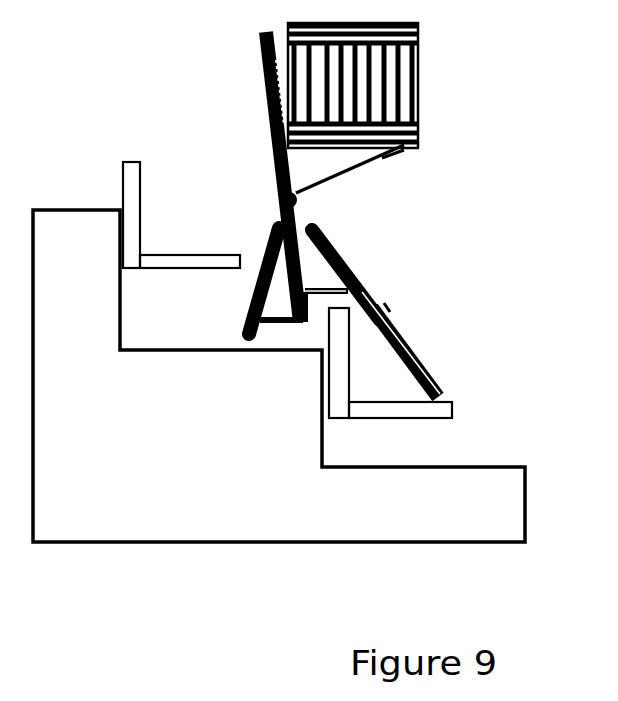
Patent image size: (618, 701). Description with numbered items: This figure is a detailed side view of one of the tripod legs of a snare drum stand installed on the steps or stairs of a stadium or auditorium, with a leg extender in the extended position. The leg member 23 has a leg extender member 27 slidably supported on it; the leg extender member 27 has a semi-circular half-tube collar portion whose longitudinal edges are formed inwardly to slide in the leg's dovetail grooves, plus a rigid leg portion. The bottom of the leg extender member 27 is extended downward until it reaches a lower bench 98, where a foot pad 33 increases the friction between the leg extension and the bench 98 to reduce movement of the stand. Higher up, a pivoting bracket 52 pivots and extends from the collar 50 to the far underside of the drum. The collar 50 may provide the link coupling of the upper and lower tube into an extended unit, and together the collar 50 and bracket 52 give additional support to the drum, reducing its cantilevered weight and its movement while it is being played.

The leg member 23 is at (345, 255).
The leg extender member 27 is at (435, 393).
The foot pad 33 is at (447, 398).
The lower bench 98 is at (455, 407).
The collar 50 is at (296, 203).
The pivoting bracket 52 is at (377, 165).